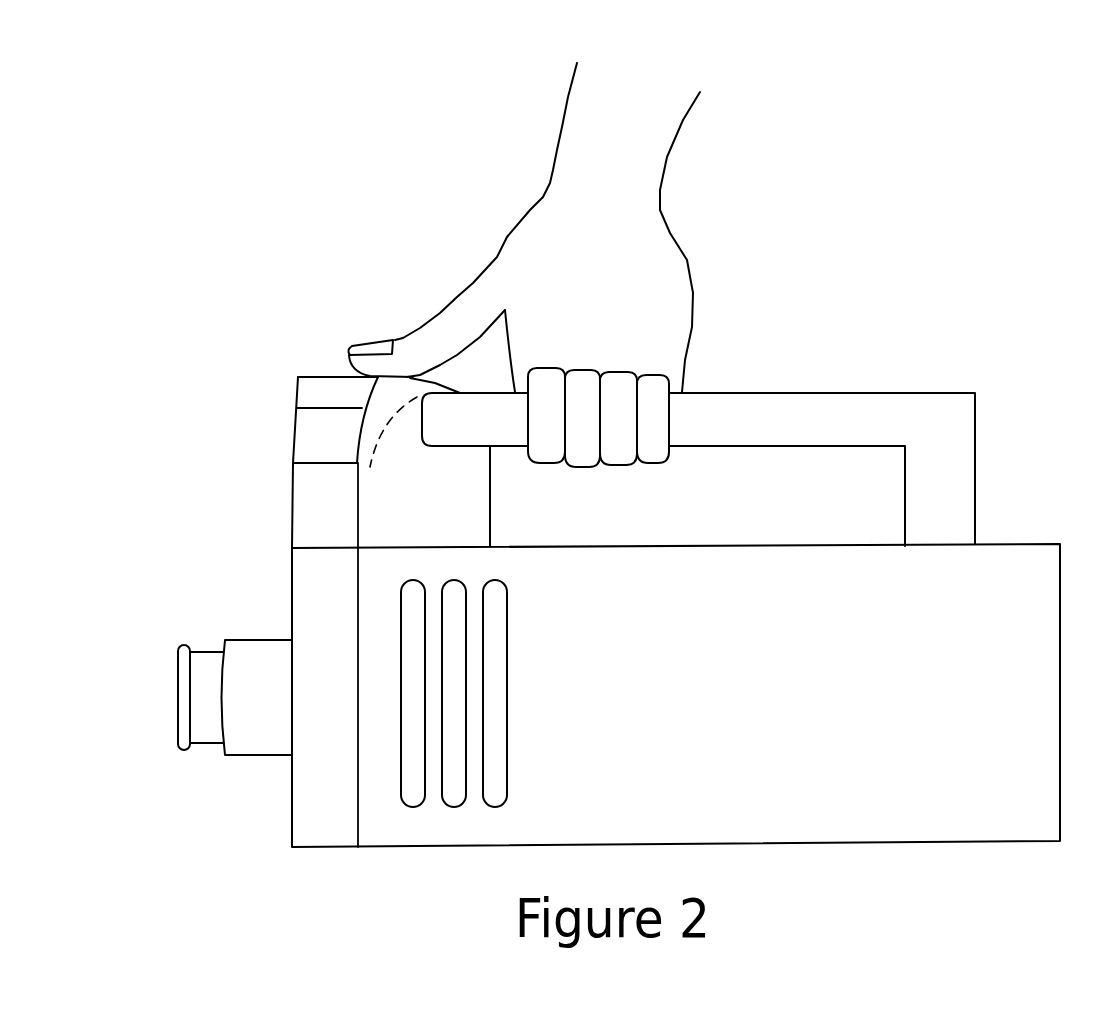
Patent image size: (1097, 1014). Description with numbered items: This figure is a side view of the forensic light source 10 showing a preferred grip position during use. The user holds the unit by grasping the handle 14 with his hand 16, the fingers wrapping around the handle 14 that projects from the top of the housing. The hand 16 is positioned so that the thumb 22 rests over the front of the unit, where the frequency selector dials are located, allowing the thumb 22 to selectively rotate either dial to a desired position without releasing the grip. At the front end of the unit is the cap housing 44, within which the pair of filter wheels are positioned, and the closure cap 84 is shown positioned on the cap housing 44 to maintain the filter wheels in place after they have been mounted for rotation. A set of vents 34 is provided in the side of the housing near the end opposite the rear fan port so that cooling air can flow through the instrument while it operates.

The forensic light source 10 is at (251, 441).
The handle 14 is at (523, 390).
The hand 16 is at (525, 253).
The thumb 22 is at (397, 338).
The vents 34 is at (498, 692).
The cap housing 44 is at (335, 495).
The closure cap 84 is at (330, 393).